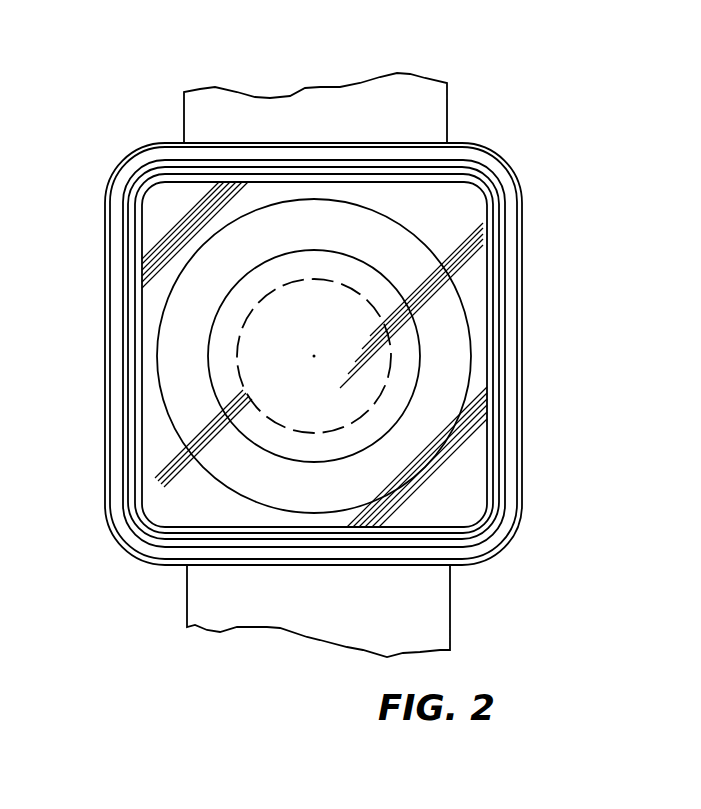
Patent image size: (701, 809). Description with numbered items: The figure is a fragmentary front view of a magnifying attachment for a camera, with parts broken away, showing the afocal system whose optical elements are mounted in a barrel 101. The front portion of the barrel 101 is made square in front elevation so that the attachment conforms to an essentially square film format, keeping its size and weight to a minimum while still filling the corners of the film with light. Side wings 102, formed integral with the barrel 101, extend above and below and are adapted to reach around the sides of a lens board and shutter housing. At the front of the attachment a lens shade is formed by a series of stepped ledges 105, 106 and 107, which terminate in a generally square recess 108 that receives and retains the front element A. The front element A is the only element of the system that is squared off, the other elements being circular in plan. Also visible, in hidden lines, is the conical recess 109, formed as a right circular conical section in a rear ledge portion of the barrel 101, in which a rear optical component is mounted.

The barrel 101 is at (136, 145).
The side wings 102 is at (427, 108).
The stepped ledge 105 is at (515, 255).
The stepped ledge 106 is at (503, 273).
The stepped ledge 107 is at (491, 299).
The square recess 108 is at (481, 339).
The conical recess 109 is at (381, 290).
The front element A is at (476, 471).